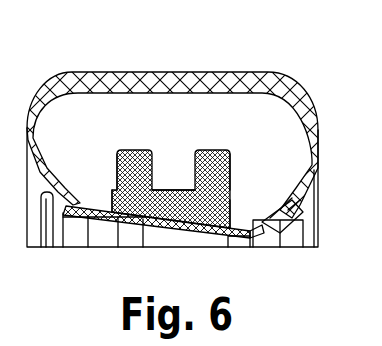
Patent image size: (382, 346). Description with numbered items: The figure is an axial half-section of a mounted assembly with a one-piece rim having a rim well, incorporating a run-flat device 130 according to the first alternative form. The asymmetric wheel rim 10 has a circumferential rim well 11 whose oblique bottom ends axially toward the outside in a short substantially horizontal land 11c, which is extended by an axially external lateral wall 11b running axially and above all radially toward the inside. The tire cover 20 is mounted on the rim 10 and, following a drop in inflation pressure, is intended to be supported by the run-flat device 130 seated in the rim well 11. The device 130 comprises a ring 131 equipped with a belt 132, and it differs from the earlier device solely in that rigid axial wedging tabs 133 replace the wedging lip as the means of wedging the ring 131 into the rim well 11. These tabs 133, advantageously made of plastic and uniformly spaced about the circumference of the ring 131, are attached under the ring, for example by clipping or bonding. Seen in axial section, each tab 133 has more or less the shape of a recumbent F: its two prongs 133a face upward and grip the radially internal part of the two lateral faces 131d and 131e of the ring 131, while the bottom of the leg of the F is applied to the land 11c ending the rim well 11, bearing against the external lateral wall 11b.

The wheel rim 10 is at (83, 216).
The rim well 11 is at (147, 226).
The axially external lateral wall 11b is at (260, 225).
The land 11c is at (238, 241).
The tire cover 20 is at (274, 75).
The run-flat device 130 is at (193, 128).
The ring 131 is at (128, 149).
The lateral face of the ring 131d is at (114, 148).
The lateral face of the ring 131e is at (231, 160).
The belt 132 is at (172, 189).
The axial wedging tab 133 is at (175, 236).
The prongs 133a is at (111, 205).